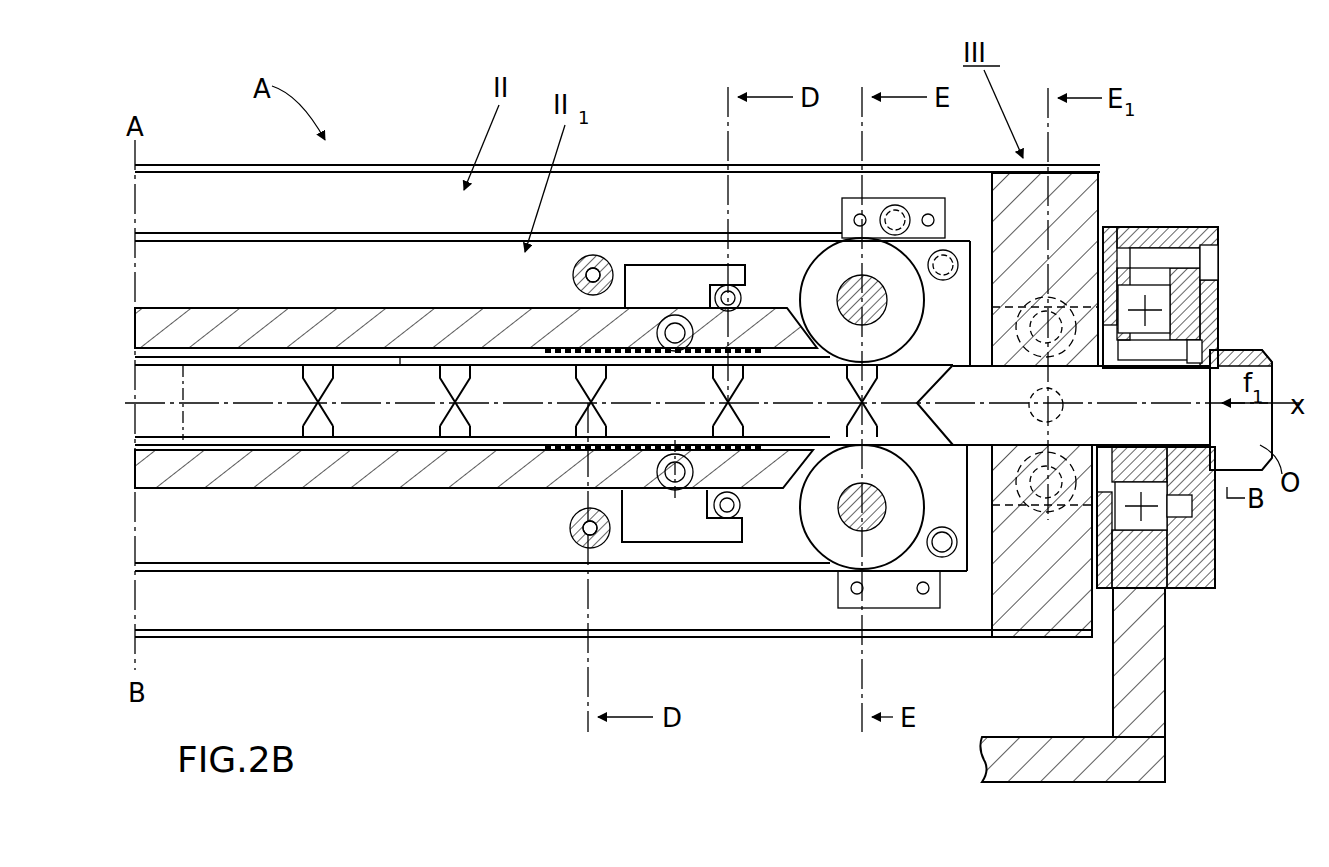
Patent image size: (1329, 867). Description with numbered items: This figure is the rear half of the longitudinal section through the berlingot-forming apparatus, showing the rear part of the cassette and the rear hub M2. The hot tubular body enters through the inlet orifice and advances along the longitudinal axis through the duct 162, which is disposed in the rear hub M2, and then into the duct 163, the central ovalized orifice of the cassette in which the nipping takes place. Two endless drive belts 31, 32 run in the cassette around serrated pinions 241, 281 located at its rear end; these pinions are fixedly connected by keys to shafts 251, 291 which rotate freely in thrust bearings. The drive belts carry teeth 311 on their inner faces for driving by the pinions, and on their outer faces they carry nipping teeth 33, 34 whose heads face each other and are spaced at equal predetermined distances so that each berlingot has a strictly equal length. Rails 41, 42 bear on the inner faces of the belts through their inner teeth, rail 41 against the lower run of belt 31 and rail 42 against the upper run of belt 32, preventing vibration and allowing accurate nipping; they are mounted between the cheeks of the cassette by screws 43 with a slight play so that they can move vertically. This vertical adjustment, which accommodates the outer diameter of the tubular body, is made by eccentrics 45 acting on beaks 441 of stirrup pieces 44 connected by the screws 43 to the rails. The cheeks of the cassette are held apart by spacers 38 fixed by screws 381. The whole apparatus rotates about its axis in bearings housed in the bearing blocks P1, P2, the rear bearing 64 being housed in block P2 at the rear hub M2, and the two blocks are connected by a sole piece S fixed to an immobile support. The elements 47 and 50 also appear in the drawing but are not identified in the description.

The duct 163 is at (544, 401).
The duct 162 is at (1124, 401).
The drive belt 31 is at (398, 360).
The teeth 311 is at (590, 352).
The drive belt 32 is at (467, 573).
The teeth 33 is at (737, 385).
The teeth 34 is at (732, 428).
The spacers 38 is at (585, 260).
The screws 381 is at (575, 525).
The rail 41 is at (470, 335).
The rail 42 is at (398, 470).
The screws 43 is at (676, 328).
The stirrup pieces 44 is at (637, 268).
The beaks 441 is at (650, 263).
The eccentrics 45 is at (741, 292).
The serrated pinion 241 is at (833, 267).
The shaft 251 is at (868, 297).
The serrated pinion 281 is at (817, 500).
The shaft 291 is at (888, 495).
The bracket plate 47 is at (850, 597).
The bushing 50 is at (945, 552).
The bearing 64 is at (1150, 294).
The rear hub M2 is at (1075, 213).
The bearing block P1 is at (1142, 243).
The bearing block P2 is at (1150, 658).
The sole piece S is at (1073, 757).